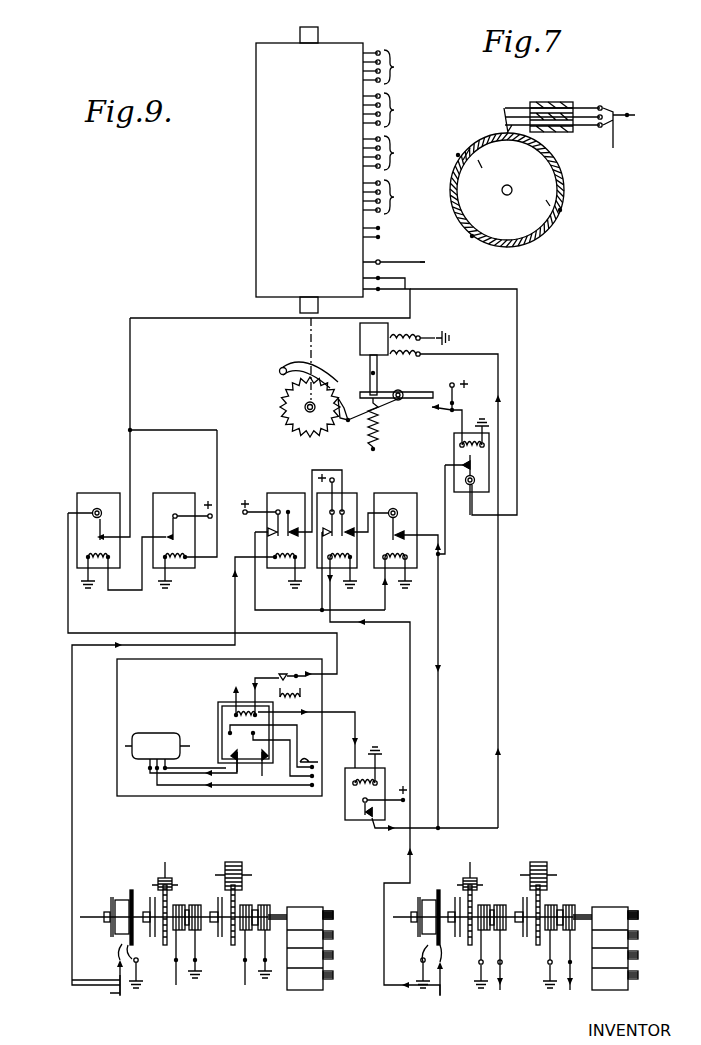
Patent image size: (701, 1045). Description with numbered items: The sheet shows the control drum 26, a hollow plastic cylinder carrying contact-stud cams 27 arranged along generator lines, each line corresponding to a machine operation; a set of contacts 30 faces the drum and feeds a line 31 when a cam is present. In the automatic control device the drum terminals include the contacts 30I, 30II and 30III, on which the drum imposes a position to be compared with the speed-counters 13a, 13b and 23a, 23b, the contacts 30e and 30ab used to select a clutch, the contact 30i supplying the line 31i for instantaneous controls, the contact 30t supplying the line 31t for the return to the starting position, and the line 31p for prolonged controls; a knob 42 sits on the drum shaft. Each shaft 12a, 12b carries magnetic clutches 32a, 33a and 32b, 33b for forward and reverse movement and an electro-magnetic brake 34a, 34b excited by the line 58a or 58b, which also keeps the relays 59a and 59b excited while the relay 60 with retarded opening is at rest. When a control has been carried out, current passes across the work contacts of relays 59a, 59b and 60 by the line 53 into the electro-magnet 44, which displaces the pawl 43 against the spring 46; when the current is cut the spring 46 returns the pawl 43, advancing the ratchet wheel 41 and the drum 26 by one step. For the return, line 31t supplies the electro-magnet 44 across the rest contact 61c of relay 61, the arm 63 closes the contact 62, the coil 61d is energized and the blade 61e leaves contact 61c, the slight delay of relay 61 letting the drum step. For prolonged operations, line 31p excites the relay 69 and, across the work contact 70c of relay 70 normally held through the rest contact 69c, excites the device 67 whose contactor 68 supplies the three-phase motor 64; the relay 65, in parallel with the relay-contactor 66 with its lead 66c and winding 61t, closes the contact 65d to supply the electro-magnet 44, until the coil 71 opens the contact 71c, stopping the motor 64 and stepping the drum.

In FIG. 7, the control drum 26 is at (565, 184).
In FIG. 9, the control drum 26 is at (345, 43).
In FIG. 7, the contact-stud cams 27 is at (471, 148).
In FIG. 7, the set of contacts 30 is at (554, 103).
In FIG. 7, the line 31 is at (630, 110).
In FIG. 9, the contact 30I is at (391, 197).
In FIG. 9, the contact 30II is at (392, 110).
In FIG. 9, the contact 30III is at (394, 110).
In FIG. 9, the contact 30e is at (387, 225).
In FIG. 9, the contact 30ab is at (392, 237).
In FIG. 9, the contact 30i is at (378, 261).
In FIG. 9, the line 31i is at (420, 262).
In FIG. 9, the line 31p is at (405, 282).
In FIG. 9, the contact 30t is at (376, 291).
In FIG. 9, the line 31t is at (511, 289).
In FIG. 9, the drum shaft knob 42 is at (300, 305).
In FIG. 9, the electro-magnet 44 is at (360, 333).
In FIG. 9, the ratchet wheel 41 is at (292, 395).
In FIG. 9, the pawl 43 is at (347, 422).
In FIG. 9, the restoring spring 46 is at (384, 424).
In FIG. 9, the arm 63 is at (420, 392).
In FIG. 9, the contact 62 is at (454, 404).
In FIG. 9, the relay 61 is at (485, 482).
In FIG. 9, the rest contact 61c is at (462, 464).
In FIG. 9, the coil 61d is at (458, 443).
In FIG. 9, the contact-blade 61e is at (475, 481).
In FIG. 9, the line 53 is at (500, 563).
In FIG. 9, the relay 70 is at (142, 454).
In FIG. 9, the work contact 70c is at (104, 532).
In FIG. 9, the relay 69 is at (185, 509).
In FIG. 9, the rest contact 69c is at (172, 530).
In FIG. 9, the relay 59a is at (276, 500).
In FIG. 9, the relay 59b is at (348, 500).
In FIG. 9, the relay with retarded opening 60 is at (400, 500).
In FIG. 9, the control device 67 is at (332, 684).
In FIG. 9, the three-phase motor 64 is at (218, 748).
In FIG. 9, the relay-contactor 66 is at (276, 742).
In FIG. 9, the switch coil lead 66c is at (251, 690).
In FIG. 9, the contactor 68 is at (253, 754).
In FIG. 9, the coil 71 is at (275, 684).
In FIG. 9, the contact 71c is at (280, 677).
In FIG. 9, the telephone-type relay 65 is at (403, 796).
In FIG. 9, the relay winding 61t is at (367, 766).
In FIG. 9, the contact 65d is at (371, 822).
In FIG. 9, the electro-magnetic brake 34a is at (128, 898).
In FIG. 9, the magnetic clutch 32a is at (171, 892).
In FIG. 9, the magnetic clutch 33a is at (238, 895).
In FIG. 9, the shaft 12a is at (278, 912).
In FIG. 9, the speed-counter 13a is at (306, 906).
In FIG. 9, the speed-counter 23a is at (332, 910).
In FIG. 9, the line 58a is at (120, 994).
In FIG. 9, the electro-magnetic brake 34b is at (440, 892).
In FIG. 9, the magnetic clutch 32b is at (476, 892).
In FIG. 9, the magnetic clutch 33b is at (544, 895).
In FIG. 9, the shaft 12b is at (585, 912).
In FIG. 9, the speed-counter 13b is at (612, 906).
In FIG. 9, the speed-counter 23b is at (634, 910).
In FIG. 9, the line 58b is at (430, 994).